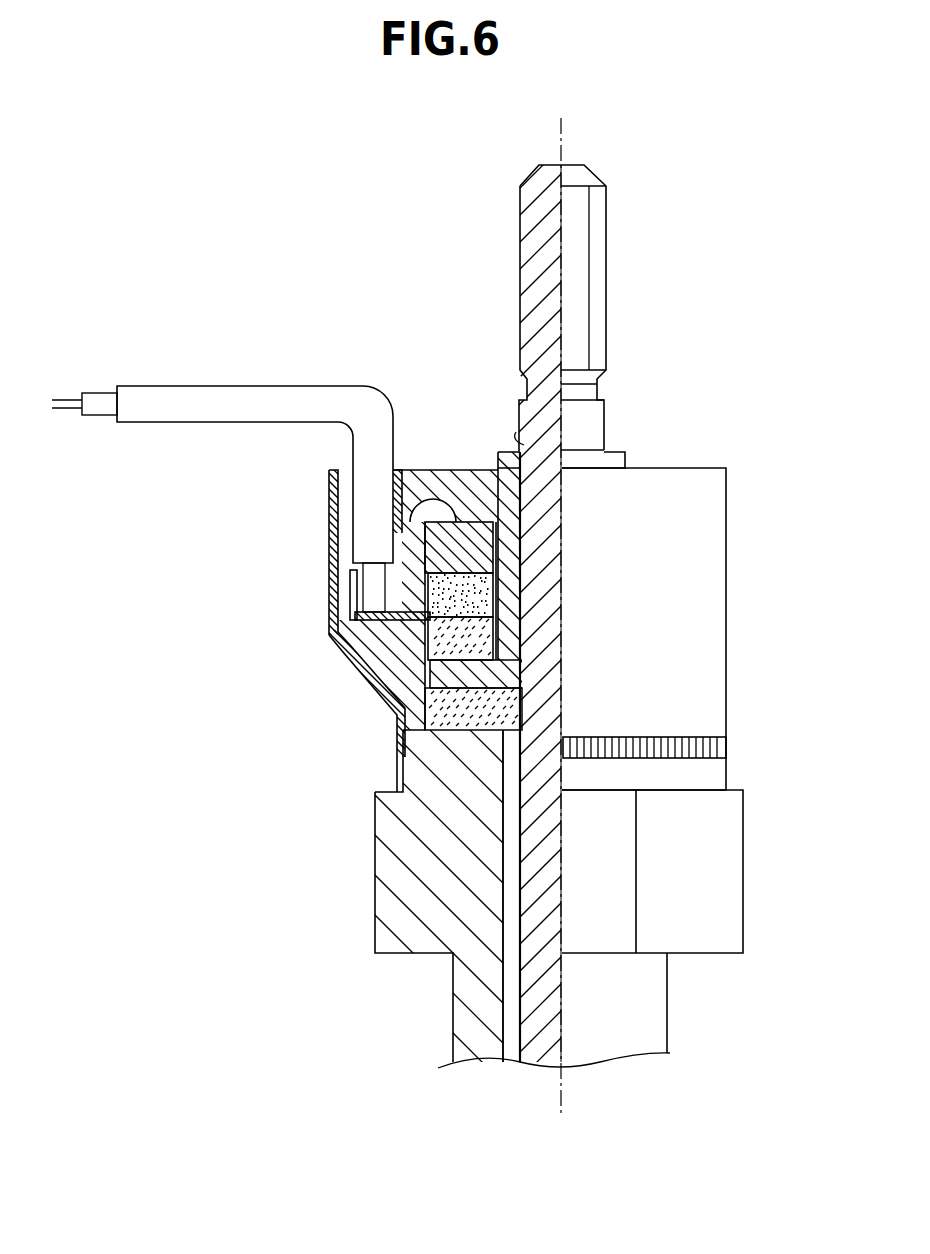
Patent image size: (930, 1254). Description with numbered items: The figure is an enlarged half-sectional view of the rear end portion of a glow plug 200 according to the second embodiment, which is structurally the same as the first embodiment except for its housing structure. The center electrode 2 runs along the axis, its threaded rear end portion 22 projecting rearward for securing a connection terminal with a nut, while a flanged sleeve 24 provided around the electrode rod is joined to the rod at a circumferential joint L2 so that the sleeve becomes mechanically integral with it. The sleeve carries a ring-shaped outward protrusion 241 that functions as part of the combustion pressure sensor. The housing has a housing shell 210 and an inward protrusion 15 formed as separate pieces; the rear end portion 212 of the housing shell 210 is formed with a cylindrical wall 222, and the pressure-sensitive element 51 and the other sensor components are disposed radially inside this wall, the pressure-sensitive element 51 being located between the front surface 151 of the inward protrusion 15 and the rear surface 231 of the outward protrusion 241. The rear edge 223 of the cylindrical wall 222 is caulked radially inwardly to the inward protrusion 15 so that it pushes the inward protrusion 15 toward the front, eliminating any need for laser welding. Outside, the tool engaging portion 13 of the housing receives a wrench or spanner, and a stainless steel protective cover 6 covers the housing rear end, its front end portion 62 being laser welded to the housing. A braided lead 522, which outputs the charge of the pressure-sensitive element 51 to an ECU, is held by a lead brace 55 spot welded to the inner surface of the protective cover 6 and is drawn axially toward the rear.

The glow plug 200 is at (362, 210).
The center electrode 2 is at (552, 597).
The rear end portion 22 is at (598, 290).
The circumferential joint L2 is at (516, 432).
The flanged sleeve 24 is at (625, 453).
The protective cover 6 is at (698, 643).
The front end portion 62 is at (716, 747).
The tool engaging portion 13 is at (697, 940).
The housing shell 210 is at (375, 905).
The rear end portion 212 is at (420, 743).
The outward protrusion 241 is at (407, 673).
The cylindrical wall 222 is at (417, 643).
The lead brace 55 is at (332, 486).
The rear edge 223 is at (432, 512).
The inward protrusion 15 is at (440, 548).
The front surface 151 is at (472, 578).
The rear surface 231 is at (462, 650).
The pressure-sensitive element 51 is at (385, 612).
The lead 522 is at (257, 397).